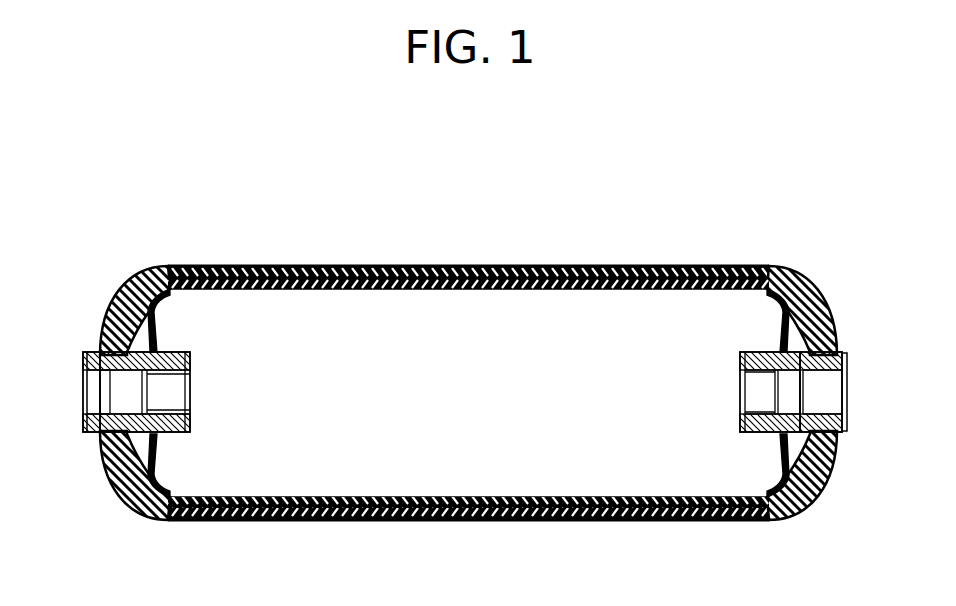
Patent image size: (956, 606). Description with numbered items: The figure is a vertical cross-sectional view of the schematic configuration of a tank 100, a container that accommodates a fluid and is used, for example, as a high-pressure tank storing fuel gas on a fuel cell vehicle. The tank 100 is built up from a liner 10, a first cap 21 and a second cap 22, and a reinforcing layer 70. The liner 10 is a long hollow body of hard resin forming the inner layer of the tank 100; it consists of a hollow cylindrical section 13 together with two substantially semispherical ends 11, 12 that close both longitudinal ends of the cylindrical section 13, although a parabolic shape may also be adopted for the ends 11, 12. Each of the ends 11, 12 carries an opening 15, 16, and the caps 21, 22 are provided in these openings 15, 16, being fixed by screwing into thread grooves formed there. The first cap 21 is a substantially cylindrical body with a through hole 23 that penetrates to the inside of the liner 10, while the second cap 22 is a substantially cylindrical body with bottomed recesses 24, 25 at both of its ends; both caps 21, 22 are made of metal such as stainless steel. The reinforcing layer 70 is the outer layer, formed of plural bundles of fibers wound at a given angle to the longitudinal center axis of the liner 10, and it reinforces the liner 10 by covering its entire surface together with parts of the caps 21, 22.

The tank 100 is at (703, 210).
The reinforcing layer 70 is at (440, 279).
The liner 10 is at (629, 416).
The end 11 is at (172, 490).
The end 12 is at (762, 490).
The cylindrical section 13 is at (464, 497).
The opening 15 is at (190, 357).
The opening 16 is at (743, 359).
The first cap 21 is at (83, 353).
The second cap 22 is at (845, 360).
The through hole 23 is at (100, 390).
The bottomed recess 24 is at (762, 390).
The bottomed recess 25 is at (833, 395).